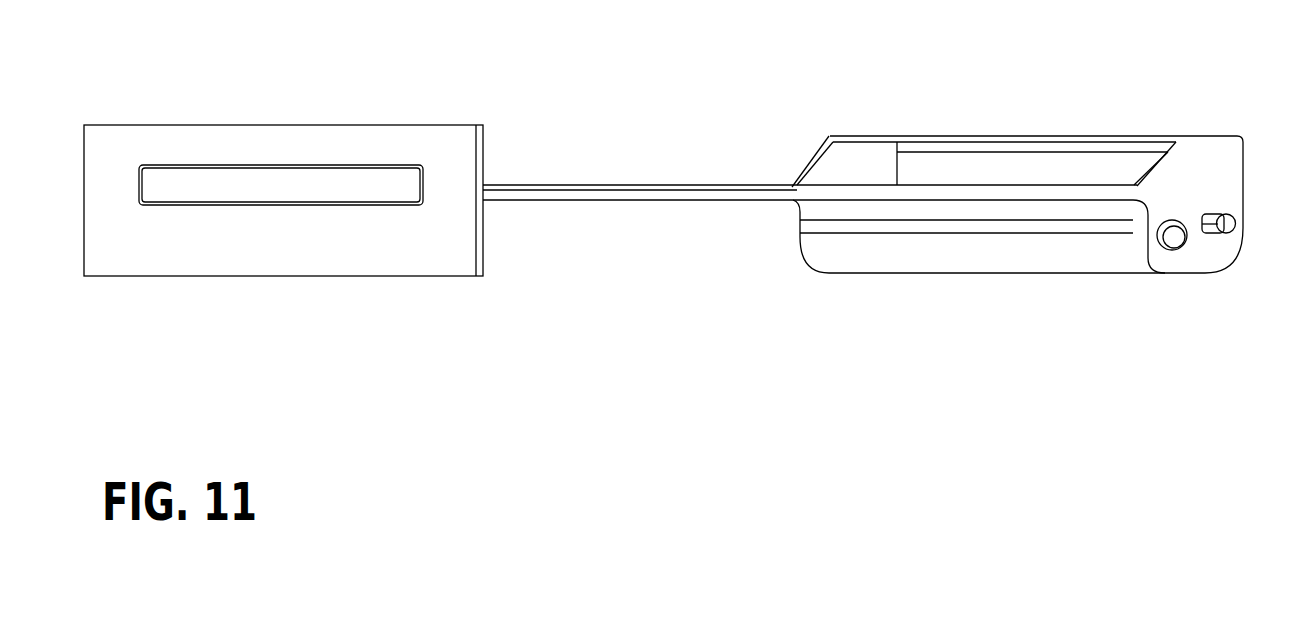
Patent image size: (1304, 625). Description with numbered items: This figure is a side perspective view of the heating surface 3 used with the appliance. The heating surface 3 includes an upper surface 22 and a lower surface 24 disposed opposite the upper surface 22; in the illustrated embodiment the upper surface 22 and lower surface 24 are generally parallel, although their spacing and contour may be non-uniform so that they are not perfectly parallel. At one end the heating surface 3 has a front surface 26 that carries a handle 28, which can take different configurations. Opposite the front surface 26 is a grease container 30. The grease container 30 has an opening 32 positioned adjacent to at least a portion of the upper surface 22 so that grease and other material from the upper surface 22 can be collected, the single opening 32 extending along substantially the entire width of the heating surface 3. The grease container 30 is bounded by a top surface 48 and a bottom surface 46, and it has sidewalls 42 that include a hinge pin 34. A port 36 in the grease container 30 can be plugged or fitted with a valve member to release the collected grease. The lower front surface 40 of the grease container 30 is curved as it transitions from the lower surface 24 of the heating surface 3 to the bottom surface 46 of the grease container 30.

The heating surface 3 is at (650, 152).
The upper surface 22 is at (632, 185).
The lower surface 24 is at (650, 200).
The front surface 26 is at (308, 243).
The handle 28 is at (250, 182).
The grease container 30 is at (1010, 240).
The opening 32 is at (963, 170).
The hinge pin 34 is at (1215, 235).
The port 36 is at (1172, 240).
The lower front surface 40 is at (837, 245).
The sidewalls 42 is at (1195, 168).
The bottom surface 46 is at (890, 272).
The top surface 48 is at (1067, 137).